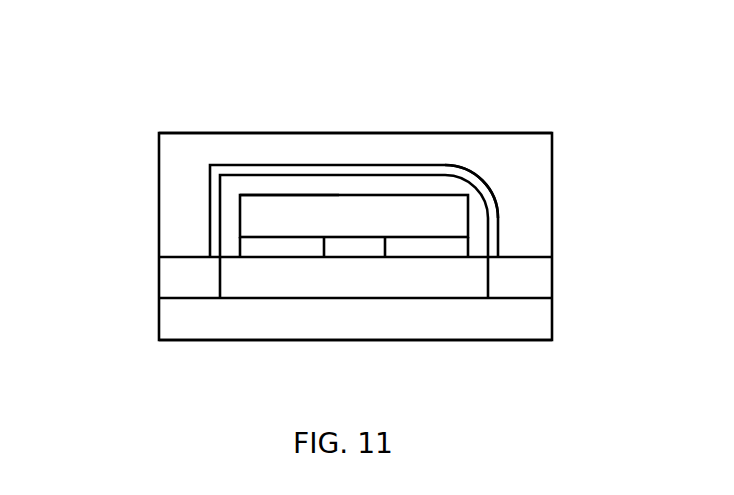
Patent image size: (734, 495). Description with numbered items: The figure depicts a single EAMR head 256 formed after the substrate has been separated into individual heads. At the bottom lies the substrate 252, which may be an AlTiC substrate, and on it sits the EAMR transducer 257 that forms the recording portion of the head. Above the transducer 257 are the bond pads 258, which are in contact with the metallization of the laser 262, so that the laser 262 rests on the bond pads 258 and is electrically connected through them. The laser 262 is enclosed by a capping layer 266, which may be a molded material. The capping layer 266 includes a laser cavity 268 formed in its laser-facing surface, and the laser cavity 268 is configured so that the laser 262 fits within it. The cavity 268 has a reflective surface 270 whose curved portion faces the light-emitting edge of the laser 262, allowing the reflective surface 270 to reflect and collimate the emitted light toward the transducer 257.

The EAMR head 256 is at (405, 42).
The capping layer 266 is at (190, 133).
The laser cavity 268 is at (307, 168).
The laser 262 is at (339, 195).
The reflective surface 270 is at (482, 200).
The bond pads 258 is at (240, 250).
The EAMR transducer 257 is at (242, 300).
The substrate 252 is at (407, 341).